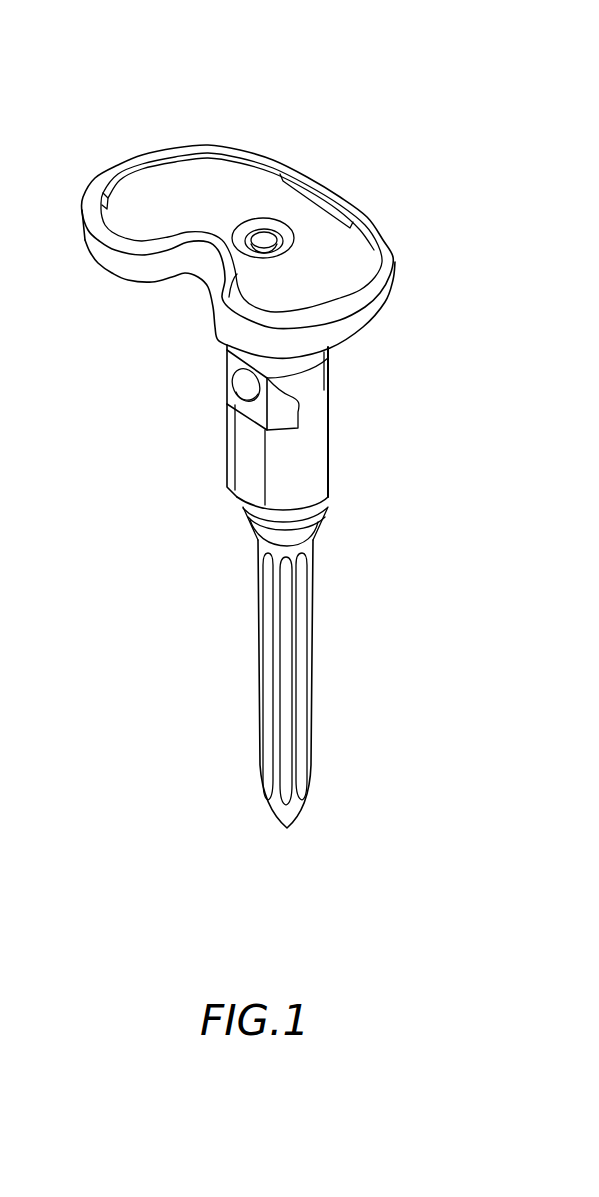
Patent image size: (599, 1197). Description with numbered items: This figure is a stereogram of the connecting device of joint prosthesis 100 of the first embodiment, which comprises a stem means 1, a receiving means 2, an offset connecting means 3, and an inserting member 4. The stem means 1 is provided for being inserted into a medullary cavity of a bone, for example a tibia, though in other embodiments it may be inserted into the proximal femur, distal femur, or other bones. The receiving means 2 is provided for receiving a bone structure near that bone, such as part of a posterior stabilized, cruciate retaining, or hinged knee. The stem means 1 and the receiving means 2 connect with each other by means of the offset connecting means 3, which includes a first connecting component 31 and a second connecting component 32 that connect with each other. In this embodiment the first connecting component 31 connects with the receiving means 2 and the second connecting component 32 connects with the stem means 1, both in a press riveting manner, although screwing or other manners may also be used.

The connecting device of joint prosthesis 100 is at (481, 90).
The stem means 1 is at (302, 687).
The receiving means 2 is at (202, 181).
The offset connecting means 3 is at (330, 436).
The first connecting component 31 is at (318, 373).
The second connecting component 32 is at (319, 476).
The inserting member 4 is at (240, 383).